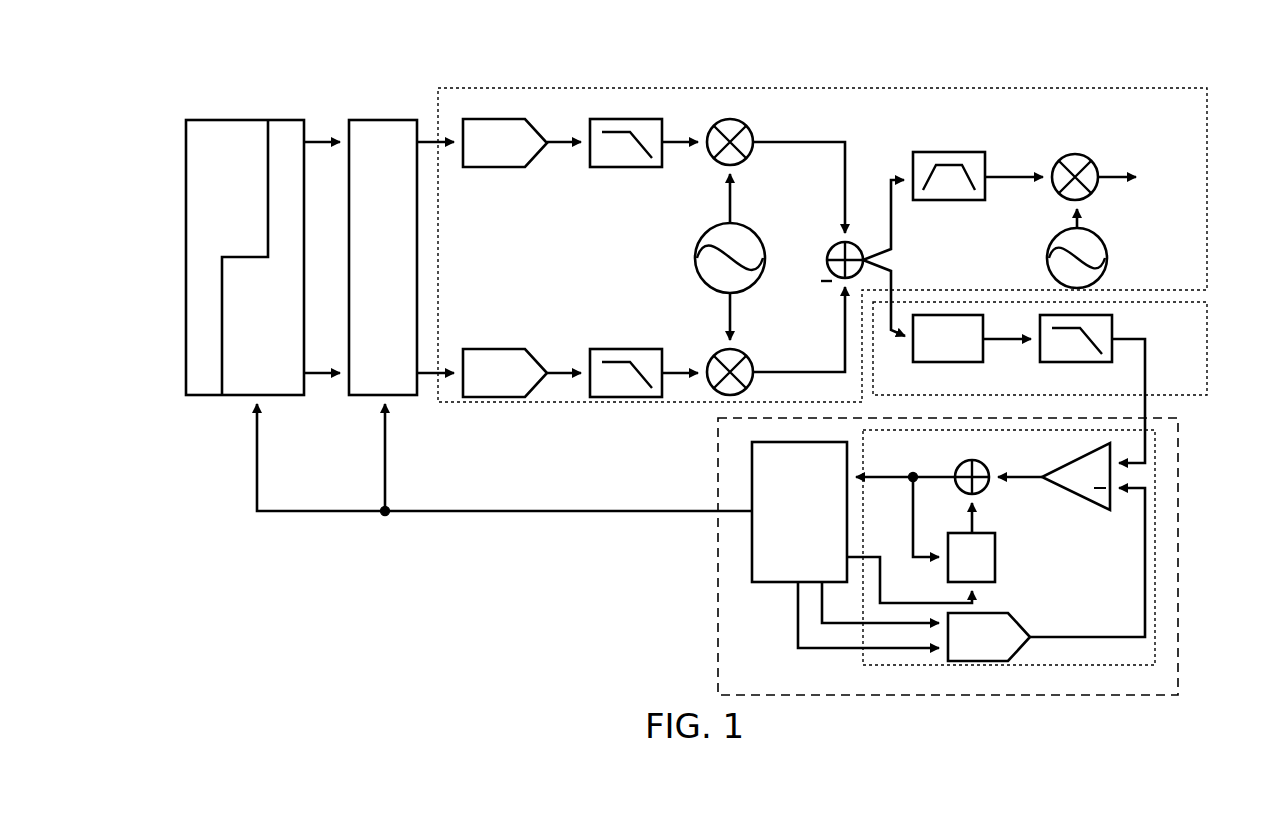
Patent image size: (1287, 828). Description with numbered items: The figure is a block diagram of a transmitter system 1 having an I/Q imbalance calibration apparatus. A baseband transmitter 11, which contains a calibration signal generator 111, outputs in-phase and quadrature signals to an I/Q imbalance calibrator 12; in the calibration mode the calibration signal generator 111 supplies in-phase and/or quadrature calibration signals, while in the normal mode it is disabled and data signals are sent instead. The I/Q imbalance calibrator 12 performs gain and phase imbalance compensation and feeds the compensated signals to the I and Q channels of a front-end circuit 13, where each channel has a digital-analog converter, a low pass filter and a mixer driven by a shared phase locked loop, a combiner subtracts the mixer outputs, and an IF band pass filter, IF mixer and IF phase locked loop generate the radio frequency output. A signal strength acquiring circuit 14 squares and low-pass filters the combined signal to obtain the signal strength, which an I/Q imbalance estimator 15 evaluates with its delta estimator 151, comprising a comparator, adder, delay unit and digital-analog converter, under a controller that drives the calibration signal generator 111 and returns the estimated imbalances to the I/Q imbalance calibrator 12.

The transmitter system 1 is at (137, 96).
The baseband transmitter 11 is at (186, 277).
The calibration signal generator 111 is at (282, 397).
The I/Q imbalance calibrator 12 is at (405, 397).
The front-end circuit 13 is at (1207, 200).
The signal strength acquiring circuit 14 is at (1207, 375).
The I/Q imbalance estimator 15 is at (1178, 460).
The delta estimator 151 is at (1155, 565).